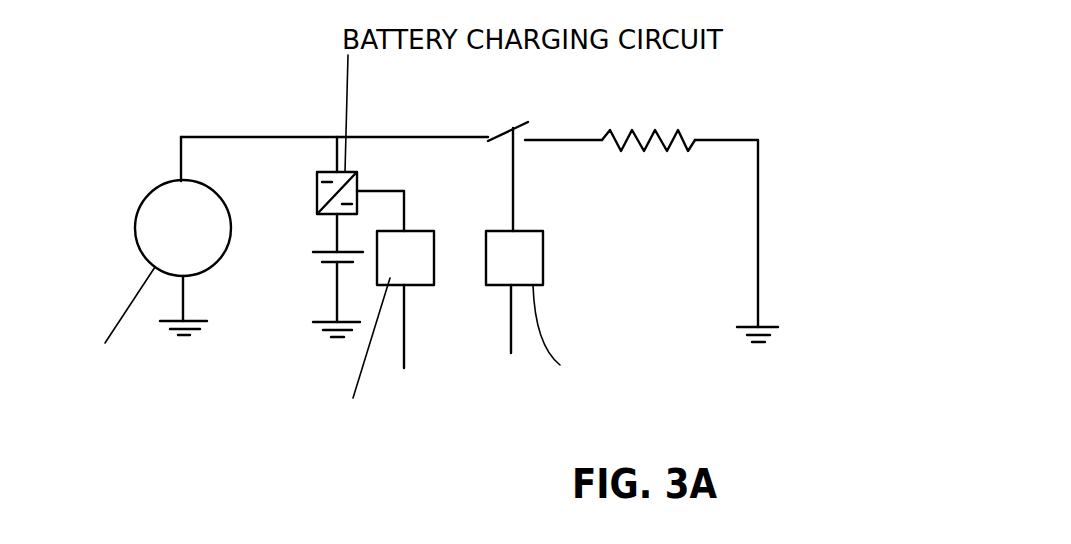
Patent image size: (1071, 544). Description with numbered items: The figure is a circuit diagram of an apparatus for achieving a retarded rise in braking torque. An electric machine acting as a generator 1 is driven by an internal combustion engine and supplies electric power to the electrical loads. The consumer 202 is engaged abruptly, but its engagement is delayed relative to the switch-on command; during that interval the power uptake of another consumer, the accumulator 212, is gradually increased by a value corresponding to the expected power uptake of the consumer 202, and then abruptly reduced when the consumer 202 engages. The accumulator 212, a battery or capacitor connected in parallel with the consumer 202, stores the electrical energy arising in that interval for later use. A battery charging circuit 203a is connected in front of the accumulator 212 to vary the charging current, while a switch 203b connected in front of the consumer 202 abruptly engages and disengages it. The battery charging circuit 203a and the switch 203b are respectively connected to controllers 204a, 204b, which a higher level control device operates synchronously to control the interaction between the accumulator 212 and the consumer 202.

The generator 1 is at (197, 269).
The consumer 202 is at (648, 132).
The battery charging circuit 203a is at (318, 172).
The switch 203b is at (503, 130).
The controller 204a is at (418, 287).
The controller 204b is at (518, 278).
The accumulator 212 is at (319, 253).